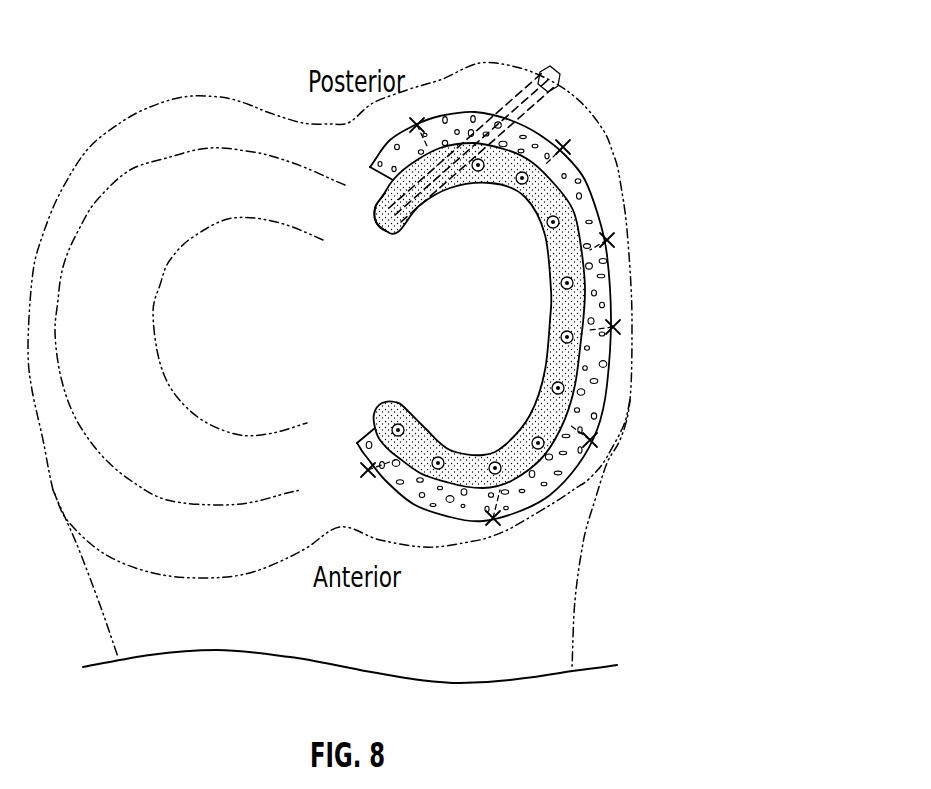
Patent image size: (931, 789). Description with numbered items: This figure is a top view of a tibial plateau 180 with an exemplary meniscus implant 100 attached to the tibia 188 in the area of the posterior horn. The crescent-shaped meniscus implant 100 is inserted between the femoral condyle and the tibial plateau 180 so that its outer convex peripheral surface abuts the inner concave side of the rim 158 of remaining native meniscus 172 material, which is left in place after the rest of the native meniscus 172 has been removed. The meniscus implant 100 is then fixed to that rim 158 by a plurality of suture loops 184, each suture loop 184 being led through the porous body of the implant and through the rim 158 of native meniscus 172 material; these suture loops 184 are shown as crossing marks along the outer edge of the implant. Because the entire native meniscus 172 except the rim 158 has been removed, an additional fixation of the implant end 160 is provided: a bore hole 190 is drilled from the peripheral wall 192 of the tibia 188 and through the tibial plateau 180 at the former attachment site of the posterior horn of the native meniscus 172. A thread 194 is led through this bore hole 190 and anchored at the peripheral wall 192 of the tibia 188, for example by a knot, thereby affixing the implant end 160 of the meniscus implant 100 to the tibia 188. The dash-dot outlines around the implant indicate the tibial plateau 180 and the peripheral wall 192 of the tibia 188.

The meniscus implant 100 is at (544, 320).
The rim of remaining native meniscus material 158 is at (616, 258).
The end of implant body 160 is at (388, 239).
The native meniscus 172 is at (595, 308).
The tibial plateau 180 is at (322, 321).
The suture loops 184 is at (593, 442).
The tibia 188 is at (627, 132).
The bore hole 190 is at (528, 90).
The peripheral wall of the tibia 192 is at (577, 97).
The thread 194 is at (549, 77).